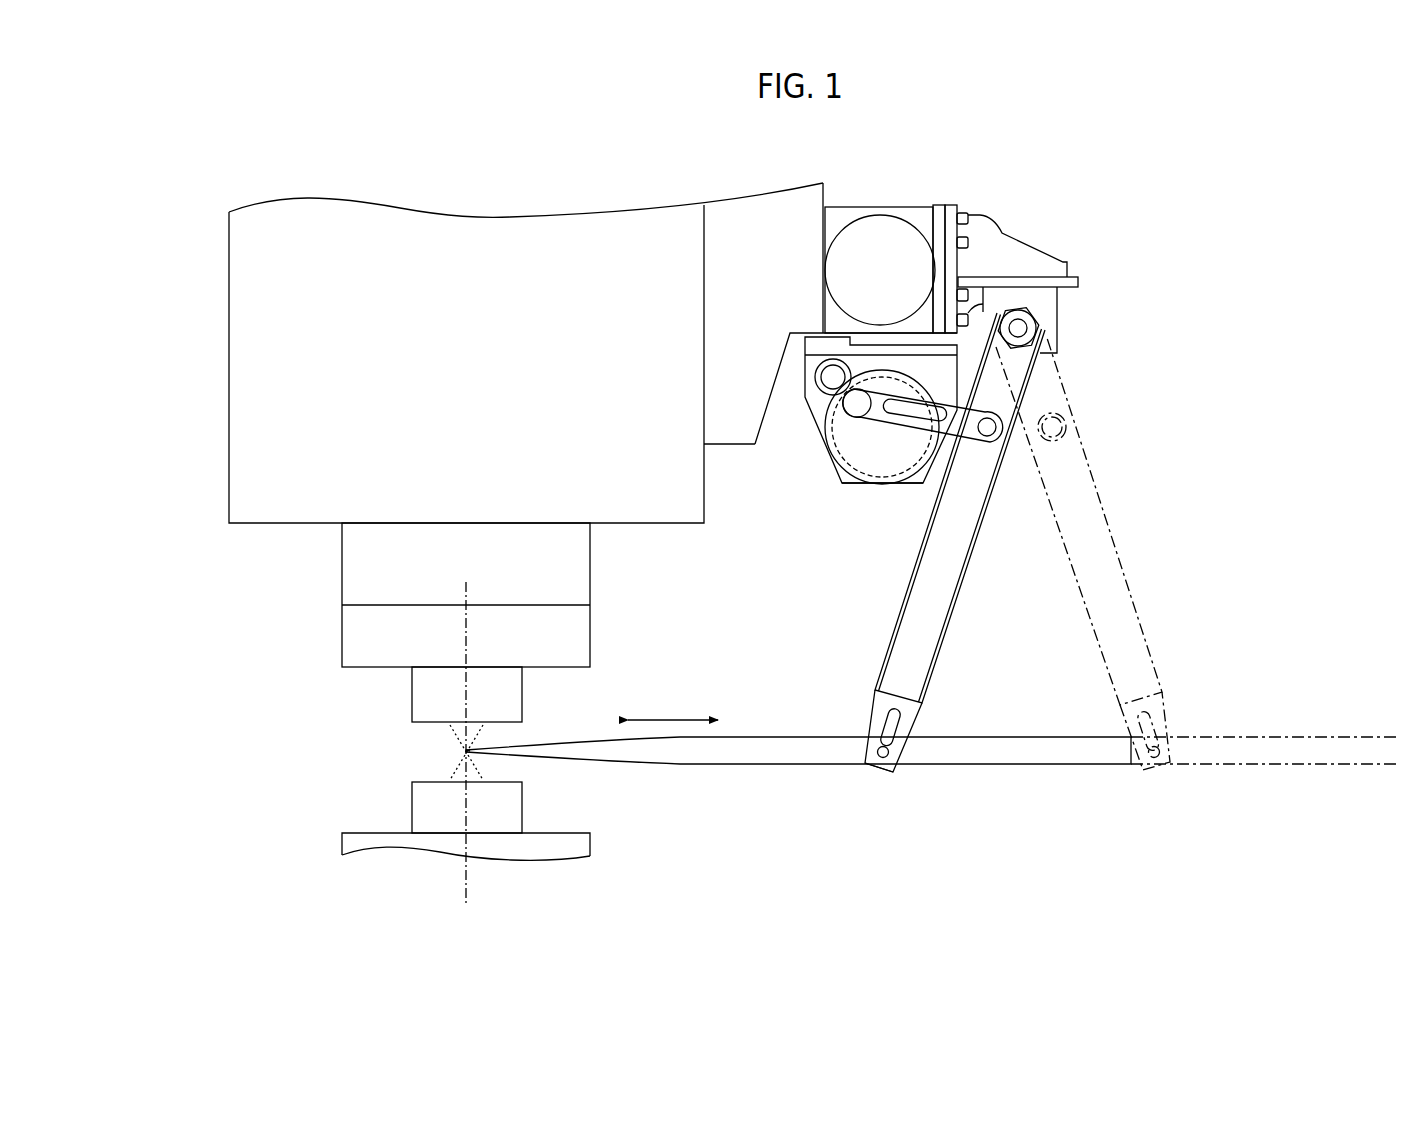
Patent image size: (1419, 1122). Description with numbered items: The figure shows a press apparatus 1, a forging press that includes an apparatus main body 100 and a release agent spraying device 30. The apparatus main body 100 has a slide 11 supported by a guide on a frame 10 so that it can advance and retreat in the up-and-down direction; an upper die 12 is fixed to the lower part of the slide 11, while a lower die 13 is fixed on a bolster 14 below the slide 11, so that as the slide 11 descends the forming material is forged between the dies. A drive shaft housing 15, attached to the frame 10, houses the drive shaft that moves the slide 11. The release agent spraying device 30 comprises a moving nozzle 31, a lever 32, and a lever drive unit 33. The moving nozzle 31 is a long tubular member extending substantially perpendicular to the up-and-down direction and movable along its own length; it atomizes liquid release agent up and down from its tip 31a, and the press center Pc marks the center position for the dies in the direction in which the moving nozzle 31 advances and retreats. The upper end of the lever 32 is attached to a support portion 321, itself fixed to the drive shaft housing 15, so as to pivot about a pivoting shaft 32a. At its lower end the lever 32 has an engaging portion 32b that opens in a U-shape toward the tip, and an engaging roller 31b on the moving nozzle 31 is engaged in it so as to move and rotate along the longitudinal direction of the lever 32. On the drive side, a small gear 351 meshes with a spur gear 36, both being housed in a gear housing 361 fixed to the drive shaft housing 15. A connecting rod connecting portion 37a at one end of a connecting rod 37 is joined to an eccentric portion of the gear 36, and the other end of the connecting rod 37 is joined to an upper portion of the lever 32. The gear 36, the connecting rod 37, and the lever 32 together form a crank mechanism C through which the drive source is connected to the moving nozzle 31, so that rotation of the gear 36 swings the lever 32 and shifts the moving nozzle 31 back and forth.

The press apparatus 1 is at (982, 137).
The apparatus main body 100 is at (260, 195).
The frame 10 is at (227, 487).
The slide 11 is at (348, 637).
The upper die 12 is at (412, 700).
The lower die 13 is at (412, 805).
The bolster 14 is at (342, 843).
The drive shaft housing 15 is at (880, 207).
The release agent spraying device 30 is at (1152, 333).
The moving nozzle 31 is at (1068, 765).
The tip 31a is at (475, 755).
The engaging roller 31b is at (883, 753).
The lever 32 is at (890, 645).
The pivoting shaft 32a is at (1022, 330).
The engaging portion 32b is at (900, 748).
The support portion 321 is at (1058, 318).
The lever drive unit 33 is at (777, 468).
The small gear 351 is at (820, 393).
The gear 36 is at (845, 470).
The gear housing 361 is at (907, 488).
The connecting rod 37 is at (888, 425).
The connecting rod connecting portion 37a is at (852, 406).
The crank mechanism C is at (1098, 443).
The press center Pc is at (466, 761).